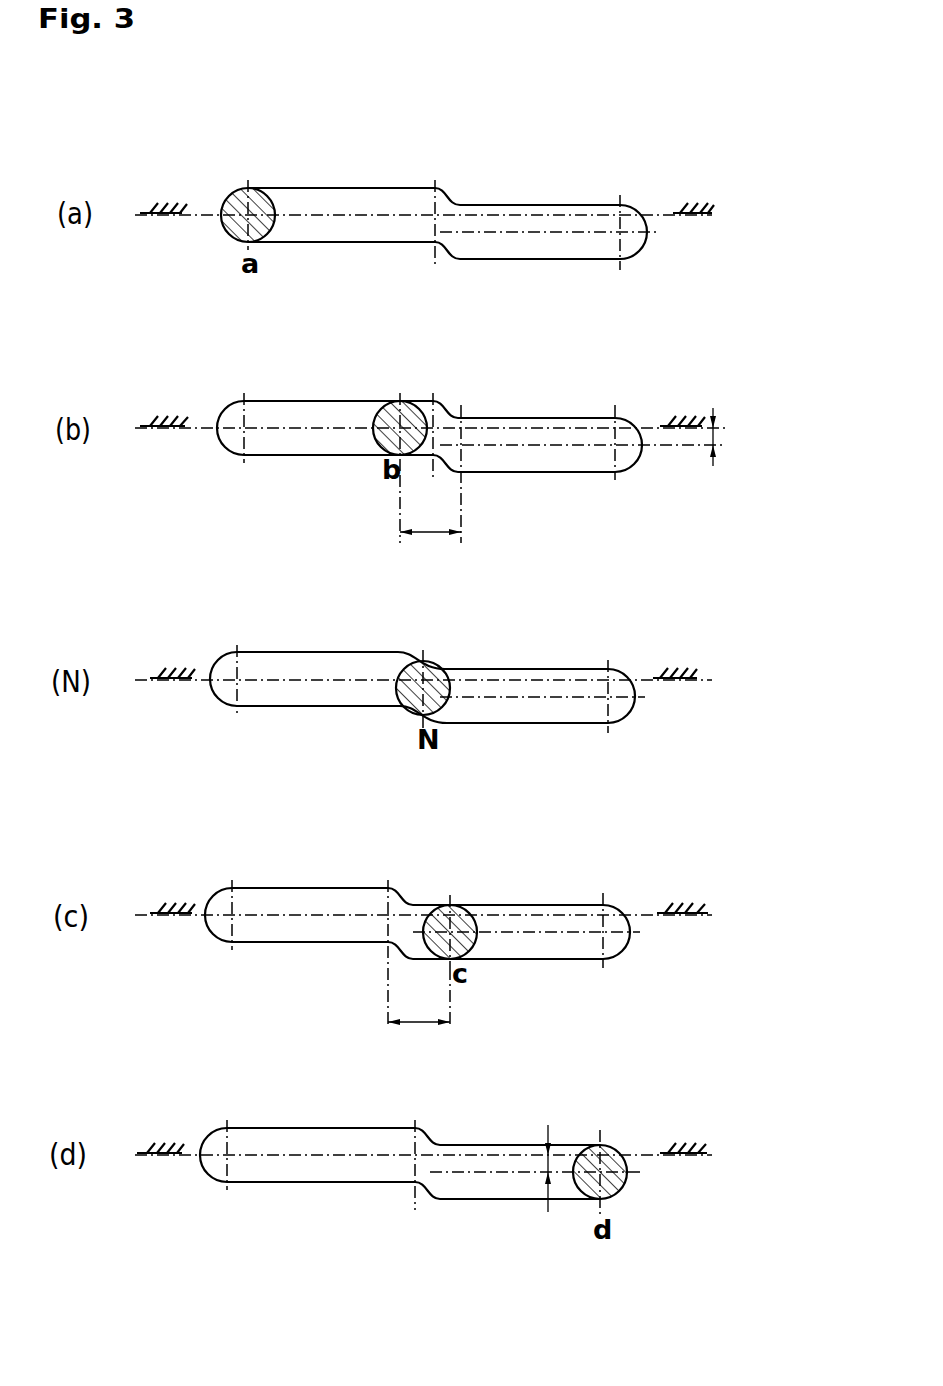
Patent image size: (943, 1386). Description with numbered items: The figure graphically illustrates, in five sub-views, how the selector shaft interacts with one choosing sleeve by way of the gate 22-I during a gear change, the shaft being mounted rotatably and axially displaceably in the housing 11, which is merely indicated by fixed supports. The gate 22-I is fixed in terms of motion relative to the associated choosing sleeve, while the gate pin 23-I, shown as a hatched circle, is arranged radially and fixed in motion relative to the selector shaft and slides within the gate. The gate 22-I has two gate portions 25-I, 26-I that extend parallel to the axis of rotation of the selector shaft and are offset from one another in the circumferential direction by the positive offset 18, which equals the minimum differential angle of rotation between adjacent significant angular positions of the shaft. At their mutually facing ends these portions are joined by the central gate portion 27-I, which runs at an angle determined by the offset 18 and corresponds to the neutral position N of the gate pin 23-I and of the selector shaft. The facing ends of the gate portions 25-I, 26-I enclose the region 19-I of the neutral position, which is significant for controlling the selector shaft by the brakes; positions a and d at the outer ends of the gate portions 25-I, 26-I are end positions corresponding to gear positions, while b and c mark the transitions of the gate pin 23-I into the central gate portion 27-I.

The housing 11 is at (157, 210).
The gate 22-I is at (341, 186).
The gate pin 23-I is at (238, 195).
The gate portion 25-I is at (320, 235).
The gate portion 26-I is at (582, 245).
The central gate portion 27-I is at (450, 192).
The offset 18 is at (725, 445).
The region of the neutral position 19-I is at (435, 535).